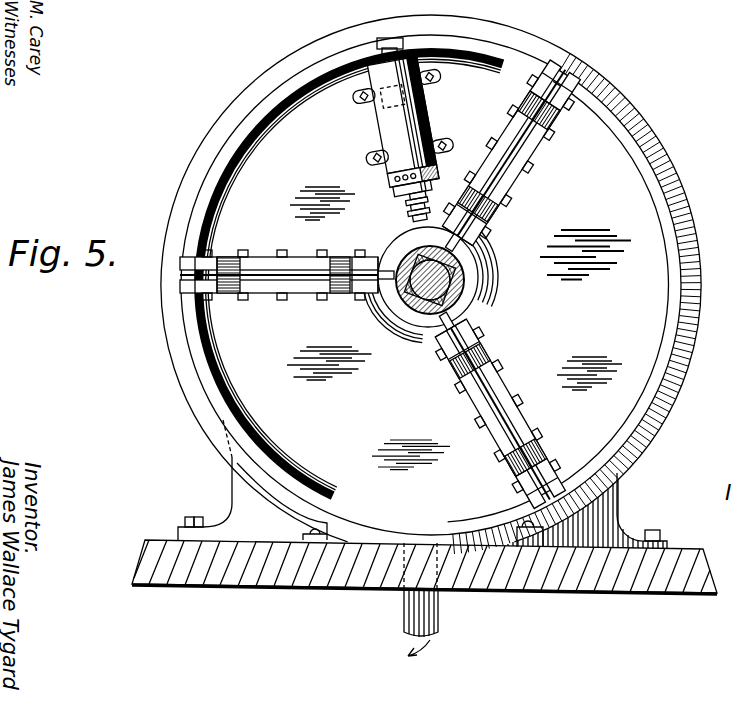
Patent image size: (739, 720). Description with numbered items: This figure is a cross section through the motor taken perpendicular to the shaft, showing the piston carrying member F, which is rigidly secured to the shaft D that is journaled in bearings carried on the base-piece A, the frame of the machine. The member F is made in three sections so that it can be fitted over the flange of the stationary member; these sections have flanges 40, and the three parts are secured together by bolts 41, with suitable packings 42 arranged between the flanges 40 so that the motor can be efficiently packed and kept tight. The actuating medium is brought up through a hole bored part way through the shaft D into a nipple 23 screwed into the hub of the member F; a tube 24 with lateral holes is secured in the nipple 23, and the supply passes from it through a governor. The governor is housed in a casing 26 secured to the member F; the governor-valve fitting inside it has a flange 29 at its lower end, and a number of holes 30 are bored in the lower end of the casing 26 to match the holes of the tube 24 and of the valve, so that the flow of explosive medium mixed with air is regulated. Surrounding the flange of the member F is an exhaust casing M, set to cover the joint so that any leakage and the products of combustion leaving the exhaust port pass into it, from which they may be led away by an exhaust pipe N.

The nipple 23 is at (411, 219).
The tube 24 is at (410, 202).
The casing 26 is at (377, 122).
The flange 29 is at (400, 189).
The holes 30 is at (393, 180).
The flanges 40 is at (338, 260).
The bolts 41 is at (352, 298).
The packings 42 is at (264, 262).
The base-piece A is at (263, 573).
The shaft D is at (466, 287).
The piston carrying member F is at (637, 153).
The exhaust casing M is at (607, 75).
The exhaust pipe N is at (437, 622).